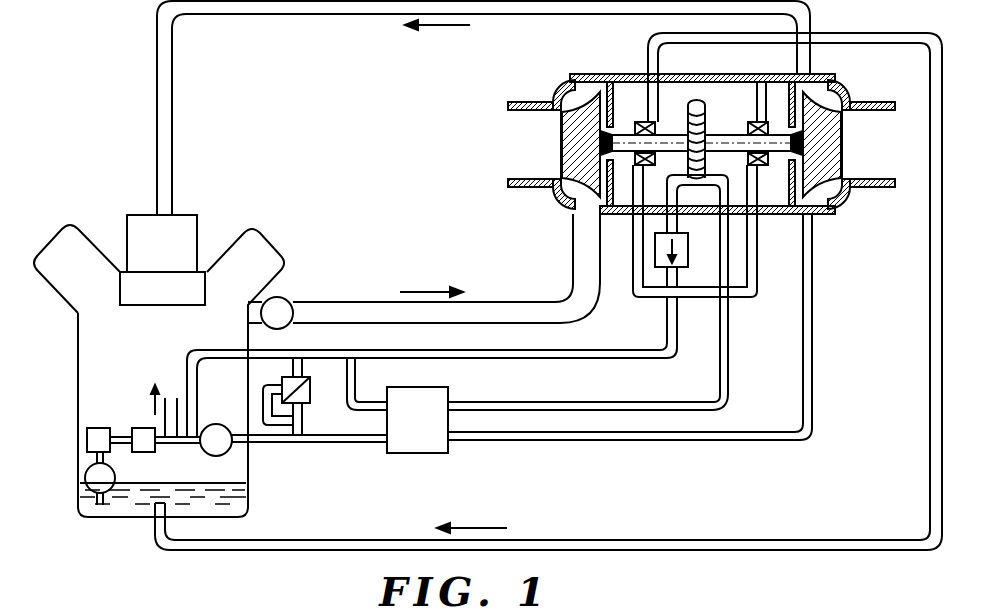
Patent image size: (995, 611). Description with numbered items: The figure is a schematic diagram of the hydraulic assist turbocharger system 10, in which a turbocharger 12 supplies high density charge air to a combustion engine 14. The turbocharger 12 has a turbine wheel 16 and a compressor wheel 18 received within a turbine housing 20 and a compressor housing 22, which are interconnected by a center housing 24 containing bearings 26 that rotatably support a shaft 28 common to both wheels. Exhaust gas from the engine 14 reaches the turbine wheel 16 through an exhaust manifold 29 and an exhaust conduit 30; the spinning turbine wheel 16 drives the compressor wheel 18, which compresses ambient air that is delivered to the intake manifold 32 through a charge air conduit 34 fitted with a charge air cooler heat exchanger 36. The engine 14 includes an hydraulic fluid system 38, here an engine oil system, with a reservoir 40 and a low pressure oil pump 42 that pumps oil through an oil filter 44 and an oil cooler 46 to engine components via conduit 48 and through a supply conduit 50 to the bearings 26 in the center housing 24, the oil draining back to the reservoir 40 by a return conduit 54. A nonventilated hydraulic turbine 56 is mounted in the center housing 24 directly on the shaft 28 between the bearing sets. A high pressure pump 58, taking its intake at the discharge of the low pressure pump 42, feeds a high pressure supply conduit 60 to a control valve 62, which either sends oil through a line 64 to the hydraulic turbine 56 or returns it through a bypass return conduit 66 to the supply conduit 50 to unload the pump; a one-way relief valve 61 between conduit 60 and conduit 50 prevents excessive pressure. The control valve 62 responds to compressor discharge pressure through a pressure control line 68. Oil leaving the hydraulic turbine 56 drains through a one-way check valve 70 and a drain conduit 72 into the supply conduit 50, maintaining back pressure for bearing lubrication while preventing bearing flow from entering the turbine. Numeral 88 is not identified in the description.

The hydraulic assist turbocharger system 10 is at (88, 97).
The turbocharger 12 is at (831, 220).
The combustion engine 14 is at (78, 363).
The turbine wheel 16 is at (563, 92).
The compressor wheel 18 is at (838, 100).
The turbine housing 20 is at (518, 102).
The compressor housing 22 is at (869, 102).
The center housing 24 is at (664, 74).
The bearings 26 is at (641, 122).
The shaft 28 is at (675, 135).
The exhaust manifold 29 is at (281, 298).
The exhaust conduit 30 is at (342, 302).
The intake manifold 32 is at (152, 305).
The charge air conduit 34 is at (536, 15).
The charge air cooler heat exchanger 36 is at (190, 215).
The hydraulic fluid system 38 is at (225, 468).
The reservoir 40 is at (148, 512).
The low pressure oil pump 42 is at (85, 478).
The oil filter 44 is at (87, 440).
The oil cooler 46 is at (135, 428).
The conduit 48 is at (163, 416).
The supply conduit 50 is at (196, 352).
The return conduit 54 is at (930, 360).
The nonventilated hydraulic turbine 56 is at (698, 104).
The high pressure pump 58 is at (208, 424).
The high pressure supply conduit 60 is at (329, 443).
The one-way relief valve 61 is at (283, 381).
The control valve 62 is at (420, 453).
The line 64 is at (593, 402).
The bypass return conduit 66 is at (356, 396).
The pressure control line 68 is at (654, 441).
The one-way check valve 70 is at (688, 241).
The drain conduit 72 is at (679, 283).
The element 88 is at (160, 603).